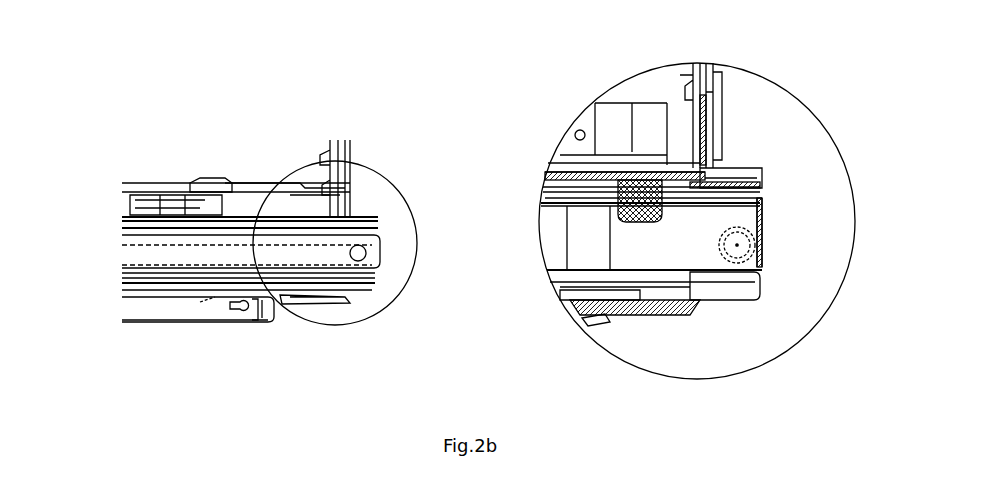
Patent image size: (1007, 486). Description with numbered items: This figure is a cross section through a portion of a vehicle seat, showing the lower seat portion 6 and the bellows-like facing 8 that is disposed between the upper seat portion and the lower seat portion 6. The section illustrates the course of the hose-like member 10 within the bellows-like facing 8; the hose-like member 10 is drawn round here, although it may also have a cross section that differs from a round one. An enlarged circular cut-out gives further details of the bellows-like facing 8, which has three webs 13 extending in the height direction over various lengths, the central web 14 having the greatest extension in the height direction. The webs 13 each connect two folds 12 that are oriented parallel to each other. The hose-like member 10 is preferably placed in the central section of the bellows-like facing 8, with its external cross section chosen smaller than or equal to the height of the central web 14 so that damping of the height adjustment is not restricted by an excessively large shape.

The lower seat portion 6 is at (222, 323).
The bellows-like facing 8 is at (530, 237).
The hose-like member 10 is at (150, 255).
The folds 12 is at (765, 200).
The webs 13 is at (762, 182).
The central web 14 is at (765, 234).